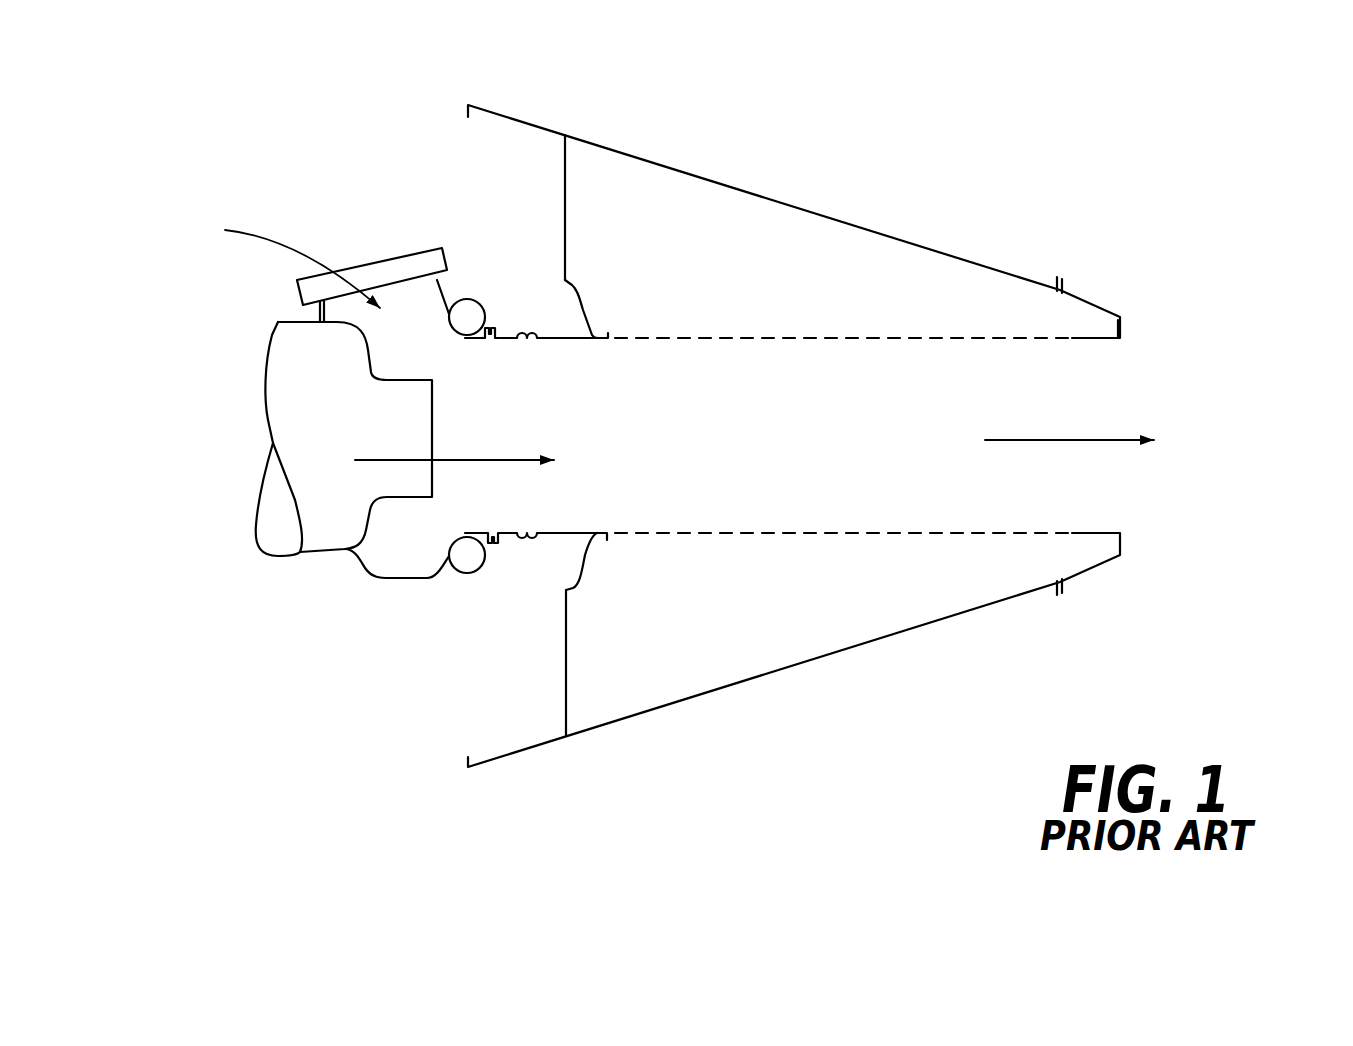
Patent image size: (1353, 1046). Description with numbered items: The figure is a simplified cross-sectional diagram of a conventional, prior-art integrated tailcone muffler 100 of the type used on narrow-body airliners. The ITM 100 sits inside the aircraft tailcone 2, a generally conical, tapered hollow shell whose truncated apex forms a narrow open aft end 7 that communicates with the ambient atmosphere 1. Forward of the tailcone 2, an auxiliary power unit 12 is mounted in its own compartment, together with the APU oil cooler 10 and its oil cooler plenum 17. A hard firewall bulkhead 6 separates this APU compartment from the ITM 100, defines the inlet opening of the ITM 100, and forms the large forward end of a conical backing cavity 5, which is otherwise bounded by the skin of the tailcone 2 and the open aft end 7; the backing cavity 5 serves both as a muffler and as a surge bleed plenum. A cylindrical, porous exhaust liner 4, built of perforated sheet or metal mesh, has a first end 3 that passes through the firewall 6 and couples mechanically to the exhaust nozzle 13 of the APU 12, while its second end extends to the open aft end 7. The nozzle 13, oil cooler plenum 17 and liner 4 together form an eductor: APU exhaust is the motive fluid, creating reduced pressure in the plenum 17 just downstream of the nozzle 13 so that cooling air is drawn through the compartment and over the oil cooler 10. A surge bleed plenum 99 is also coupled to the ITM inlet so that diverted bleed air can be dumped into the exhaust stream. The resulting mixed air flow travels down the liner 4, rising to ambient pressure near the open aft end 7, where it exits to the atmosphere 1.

The integrated tailcone muffler 100 is at (1150, 135).
The ambient atmosphere 1 is at (1314, 540).
The aircraft tailcone 2 is at (687, 173).
The first end of the porous exhaust liner 3 is at (548, 338).
The porous exhaust liner 4 is at (823, 534).
The backing cavity 5 is at (716, 281).
The firewall bulkhead 6 is at (566, 217).
The open aft end 7 is at (1090, 338).
The APU oil cooler 10 is at (414, 253).
The auxiliary power unit 12 is at (188, 473).
The exhaust nozzle 13 is at (346, 404).
The oil cooler plenum 17 is at (426, 353).
The surge bleed plenum 99 is at (473, 302).